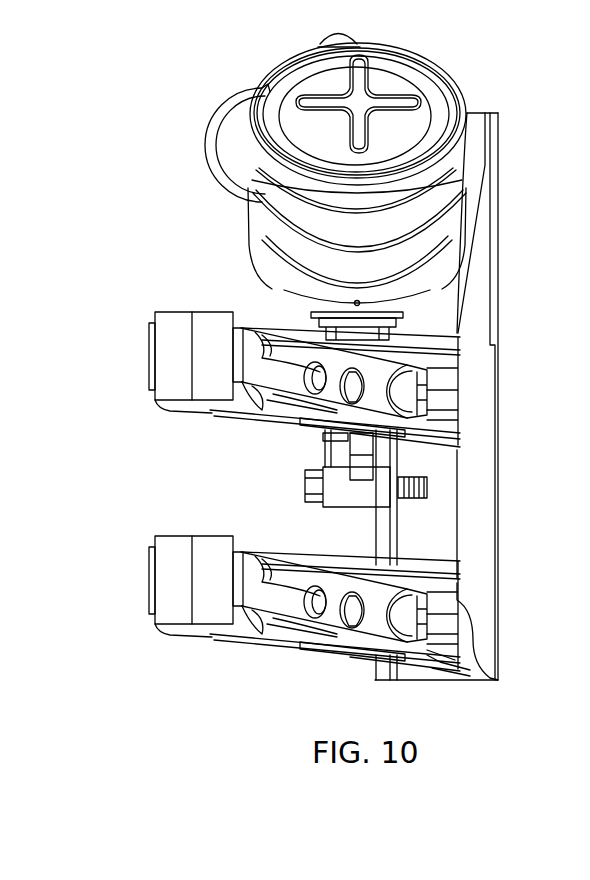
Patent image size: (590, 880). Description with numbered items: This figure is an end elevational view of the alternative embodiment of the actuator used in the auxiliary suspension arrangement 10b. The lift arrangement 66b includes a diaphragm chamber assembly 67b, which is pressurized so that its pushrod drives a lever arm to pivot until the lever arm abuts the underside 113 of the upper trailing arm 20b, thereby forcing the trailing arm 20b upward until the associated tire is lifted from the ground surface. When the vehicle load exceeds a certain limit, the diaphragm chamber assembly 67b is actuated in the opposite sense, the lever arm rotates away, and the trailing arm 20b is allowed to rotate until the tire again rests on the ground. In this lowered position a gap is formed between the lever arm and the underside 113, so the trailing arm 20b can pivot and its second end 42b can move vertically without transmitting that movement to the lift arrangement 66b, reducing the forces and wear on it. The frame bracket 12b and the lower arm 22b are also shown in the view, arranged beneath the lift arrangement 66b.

The auxiliary suspension arrangement 10b is at (166, 96).
The frame bracket 12b is at (503, 532).
The lift arrangement 66b is at (284, 313).
The diaphragm chamber assembly 67b is at (293, 73).
The second end 42b is at (183, 408).
The upper trailing arm 20b is at (245, 418).
The underside 113 is at (303, 423).
The lower control arm 22b is at (297, 645).